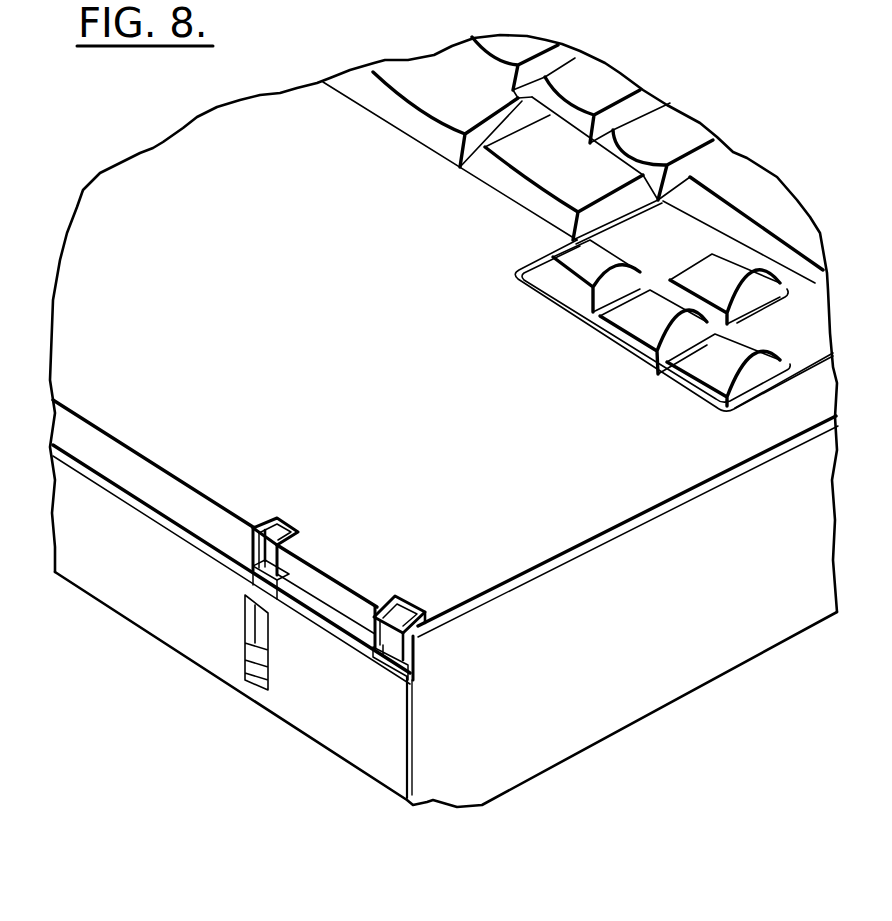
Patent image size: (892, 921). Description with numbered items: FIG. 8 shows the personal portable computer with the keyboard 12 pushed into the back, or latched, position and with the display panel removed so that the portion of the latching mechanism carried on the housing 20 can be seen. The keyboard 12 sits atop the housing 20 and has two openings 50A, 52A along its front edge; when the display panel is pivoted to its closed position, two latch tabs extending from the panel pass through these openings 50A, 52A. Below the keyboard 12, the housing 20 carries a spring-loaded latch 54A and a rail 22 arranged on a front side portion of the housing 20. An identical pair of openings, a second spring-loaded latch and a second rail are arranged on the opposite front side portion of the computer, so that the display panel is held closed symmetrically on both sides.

The keyboard 12 is at (163, 515).
The housing 20 is at (632, 723).
The rail 22 is at (393, 650).
The opening 50A is at (417, 605).
The opening 52A is at (293, 542).
The spring-loaded latch 54A is at (257, 568).